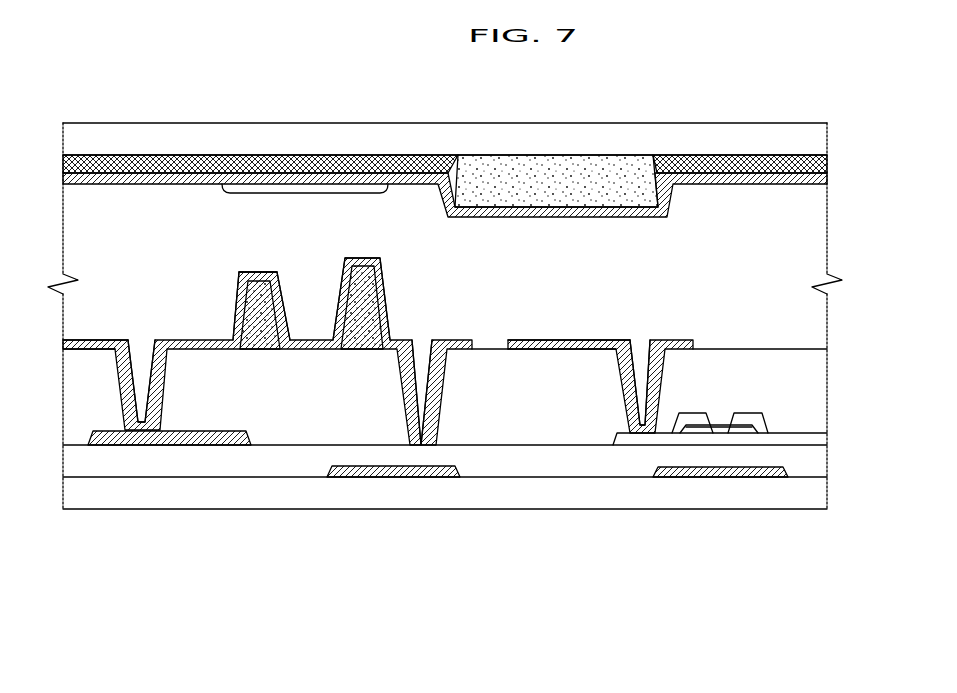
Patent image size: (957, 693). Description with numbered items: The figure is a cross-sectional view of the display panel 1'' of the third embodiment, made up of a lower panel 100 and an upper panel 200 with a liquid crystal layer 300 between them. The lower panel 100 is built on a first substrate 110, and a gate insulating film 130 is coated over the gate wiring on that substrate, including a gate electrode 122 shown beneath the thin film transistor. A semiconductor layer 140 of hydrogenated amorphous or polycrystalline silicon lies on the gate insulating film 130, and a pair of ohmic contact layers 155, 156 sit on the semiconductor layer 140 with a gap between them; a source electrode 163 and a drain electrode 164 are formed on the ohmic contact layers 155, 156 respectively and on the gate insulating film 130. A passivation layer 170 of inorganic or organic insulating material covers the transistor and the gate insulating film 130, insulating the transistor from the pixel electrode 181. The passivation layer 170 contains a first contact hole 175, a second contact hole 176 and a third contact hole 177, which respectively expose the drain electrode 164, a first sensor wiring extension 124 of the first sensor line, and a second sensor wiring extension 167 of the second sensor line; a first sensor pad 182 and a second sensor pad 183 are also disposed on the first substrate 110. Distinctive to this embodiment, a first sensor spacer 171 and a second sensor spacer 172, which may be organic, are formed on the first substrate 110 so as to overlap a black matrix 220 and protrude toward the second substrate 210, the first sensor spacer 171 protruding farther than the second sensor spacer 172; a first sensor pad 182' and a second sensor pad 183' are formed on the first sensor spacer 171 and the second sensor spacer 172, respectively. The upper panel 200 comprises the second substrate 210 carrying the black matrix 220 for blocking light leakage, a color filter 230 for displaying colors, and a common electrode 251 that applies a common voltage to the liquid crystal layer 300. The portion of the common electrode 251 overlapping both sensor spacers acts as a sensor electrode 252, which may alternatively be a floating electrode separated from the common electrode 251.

The lower panel 100 is at (848, 350).
The first substrate 110 is at (293, 490).
The gate electrode 122 is at (684, 470).
The first sensor wiring extension 124 is at (400, 470).
The gate insulating film 130 is at (240, 462).
The semiconductor layer 140 is at (735, 432).
The ohmic contact layer 155 is at (742, 424).
The ohmic contact layer 156 is at (688, 427).
The source electrode 163 is at (762, 418).
The drain electrode 164 is at (692, 418).
The second sensor wiring extension 167 is at (157, 445).
The passivation layer 170 is at (480, 420).
The first sensor spacer 171 is at (340, 310).
The second sensor spacer 172 is at (238, 296).
The first contact hole 175 is at (650, 324).
The second contact hole 176 is at (424, 325).
The third contact hole 177 is at (140, 324).
The pixel electrode 181 is at (557, 350).
The first sensor pad 182 is at (361, 336).
The first sensor pad 182' is at (366, 280).
The second sensor pad 183 is at (95, 377).
The second sensor pad 183' is at (248, 245).
The upper panel 200 is at (848, 123).
The second substrate 210 is at (207, 140).
The black matrix 220 is at (148, 165).
The color filter 230 is at (520, 175).
The common electrode 251 is at (580, 205).
The sensor electrode 252 is at (305, 195).
The liquid crystal layer 300 is at (848, 195).
The display panel 1'' is at (450, 619).